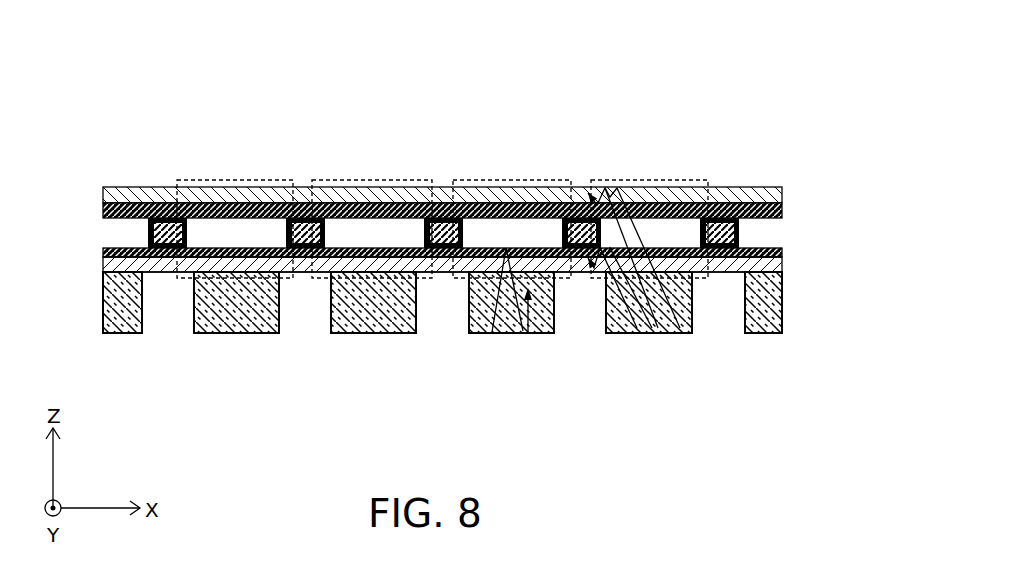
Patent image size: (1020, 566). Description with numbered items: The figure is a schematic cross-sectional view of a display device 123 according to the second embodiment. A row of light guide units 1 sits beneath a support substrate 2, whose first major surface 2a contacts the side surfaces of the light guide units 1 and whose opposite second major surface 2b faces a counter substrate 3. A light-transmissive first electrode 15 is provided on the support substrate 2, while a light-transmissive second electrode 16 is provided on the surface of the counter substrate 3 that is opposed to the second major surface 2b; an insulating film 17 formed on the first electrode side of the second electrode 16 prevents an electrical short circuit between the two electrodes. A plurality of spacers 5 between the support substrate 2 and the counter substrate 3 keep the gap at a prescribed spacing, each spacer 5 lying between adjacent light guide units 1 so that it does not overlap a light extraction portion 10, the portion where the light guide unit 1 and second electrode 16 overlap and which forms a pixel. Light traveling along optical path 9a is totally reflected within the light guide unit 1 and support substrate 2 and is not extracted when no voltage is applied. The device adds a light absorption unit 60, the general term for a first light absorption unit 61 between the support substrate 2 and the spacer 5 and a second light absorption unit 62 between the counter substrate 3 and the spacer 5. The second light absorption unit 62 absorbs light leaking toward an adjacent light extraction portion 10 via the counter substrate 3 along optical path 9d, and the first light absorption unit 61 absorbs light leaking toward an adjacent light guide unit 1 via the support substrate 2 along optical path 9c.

The light guide unit 1 is at (234, 334).
The support substrate 2 is at (108, 263).
The first major surface 2a is at (737, 273).
The second major surface 2b is at (760, 258).
The counter substrate 3 is at (132, 197).
The spacer 5 is at (152, 222).
The optical path 9a is at (535, 334).
The optical path 9c is at (610, 334).
The optical path 9d is at (662, 334).
The light extraction portion 10 is at (233, 180).
The first electrode 15 is at (108, 255).
The second electrode 16 is at (108, 204).
The insulating film 17 is at (108, 213).
The light absorption unit 60 is at (462, 264).
The first light absorption unit 61 is at (165, 249).
The second light absorption unit 62 is at (168, 226).
The display device 123 is at (678, 92).